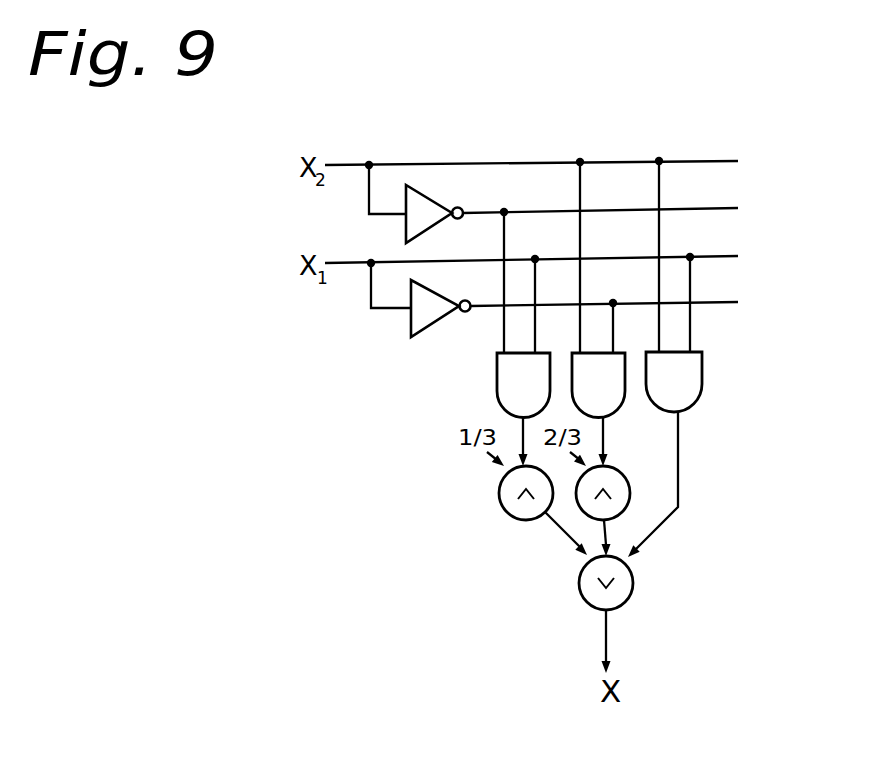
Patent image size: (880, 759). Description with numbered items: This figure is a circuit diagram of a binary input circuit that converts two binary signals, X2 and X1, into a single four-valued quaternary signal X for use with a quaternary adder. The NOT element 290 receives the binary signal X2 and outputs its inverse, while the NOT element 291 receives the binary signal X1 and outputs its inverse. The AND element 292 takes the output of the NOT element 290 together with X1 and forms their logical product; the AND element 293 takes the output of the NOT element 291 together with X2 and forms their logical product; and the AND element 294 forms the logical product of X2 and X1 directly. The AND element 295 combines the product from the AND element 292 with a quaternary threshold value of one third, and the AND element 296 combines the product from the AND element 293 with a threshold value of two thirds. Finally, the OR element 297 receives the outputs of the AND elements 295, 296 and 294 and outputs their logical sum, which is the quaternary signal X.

The NOT element 290 is at (432, 193).
The NOT element 291 is at (432, 290).
The AND element 292 is at (497, 370).
The AND element 293 is at (626, 396).
The AND element 294 is at (702, 366).
The AND element 295 is at (503, 511).
The AND element 296 is at (618, 456).
The OR element 297 is at (633, 583).